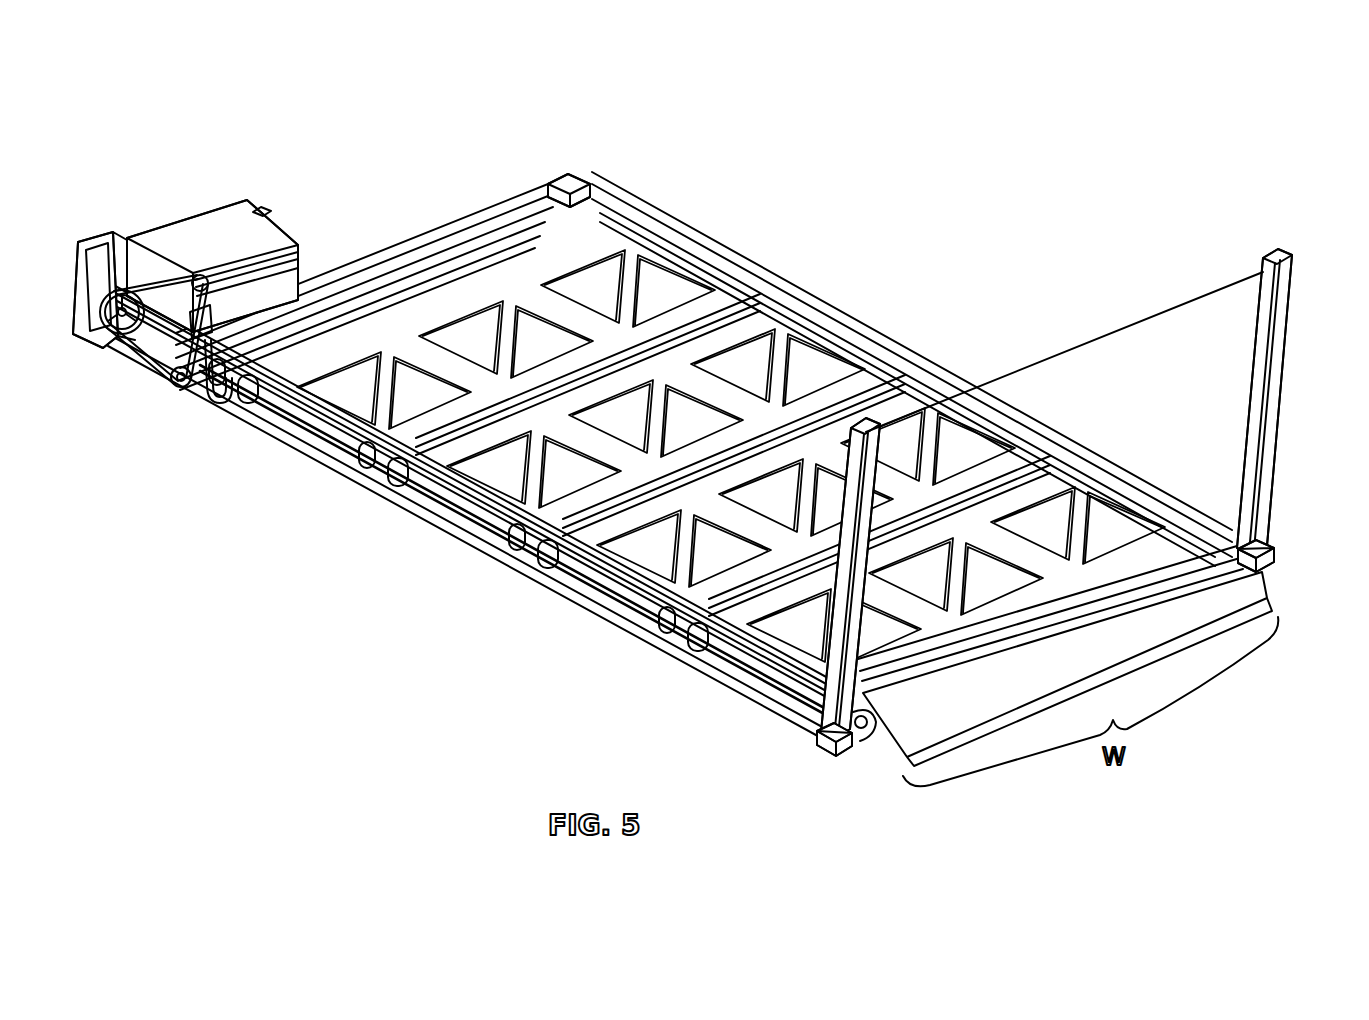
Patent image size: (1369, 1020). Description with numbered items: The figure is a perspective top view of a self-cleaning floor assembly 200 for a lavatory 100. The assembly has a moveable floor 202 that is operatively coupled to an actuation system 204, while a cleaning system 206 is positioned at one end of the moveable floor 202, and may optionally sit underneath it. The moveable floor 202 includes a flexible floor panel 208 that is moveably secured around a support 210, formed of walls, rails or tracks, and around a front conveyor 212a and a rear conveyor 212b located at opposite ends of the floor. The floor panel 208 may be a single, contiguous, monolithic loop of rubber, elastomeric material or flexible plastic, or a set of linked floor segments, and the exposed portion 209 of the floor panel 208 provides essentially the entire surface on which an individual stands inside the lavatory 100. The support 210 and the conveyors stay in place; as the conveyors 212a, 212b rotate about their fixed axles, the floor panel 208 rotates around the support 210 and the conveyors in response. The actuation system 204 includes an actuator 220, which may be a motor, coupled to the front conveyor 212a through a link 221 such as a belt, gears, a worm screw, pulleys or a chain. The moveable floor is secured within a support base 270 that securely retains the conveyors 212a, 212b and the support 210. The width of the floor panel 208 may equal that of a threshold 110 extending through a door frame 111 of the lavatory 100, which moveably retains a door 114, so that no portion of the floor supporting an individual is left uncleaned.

The lavatory 100 is at (719, 463).
The self-cleaning floor assembly 200 is at (672, 463).
The moveable floor 202 is at (726, 468).
The actuation system 204 is at (185, 285).
The cleaning system 206 is at (505, 188).
The floor panel 208 is at (770, 345).
The exposed portion 209 is at (680, 282).
The support 210 is at (478, 523).
The front conveyor 212a is at (580, 200).
The rear conveyor 212b is at (858, 733).
The actuator 220 is at (181, 240).
The link 221 is at (125, 338).
The support base 270 is at (758, 688).
The threshold 110 is at (1225, 552).
The door frame 111 is at (1283, 383).
The door 114 is at (1150, 340).